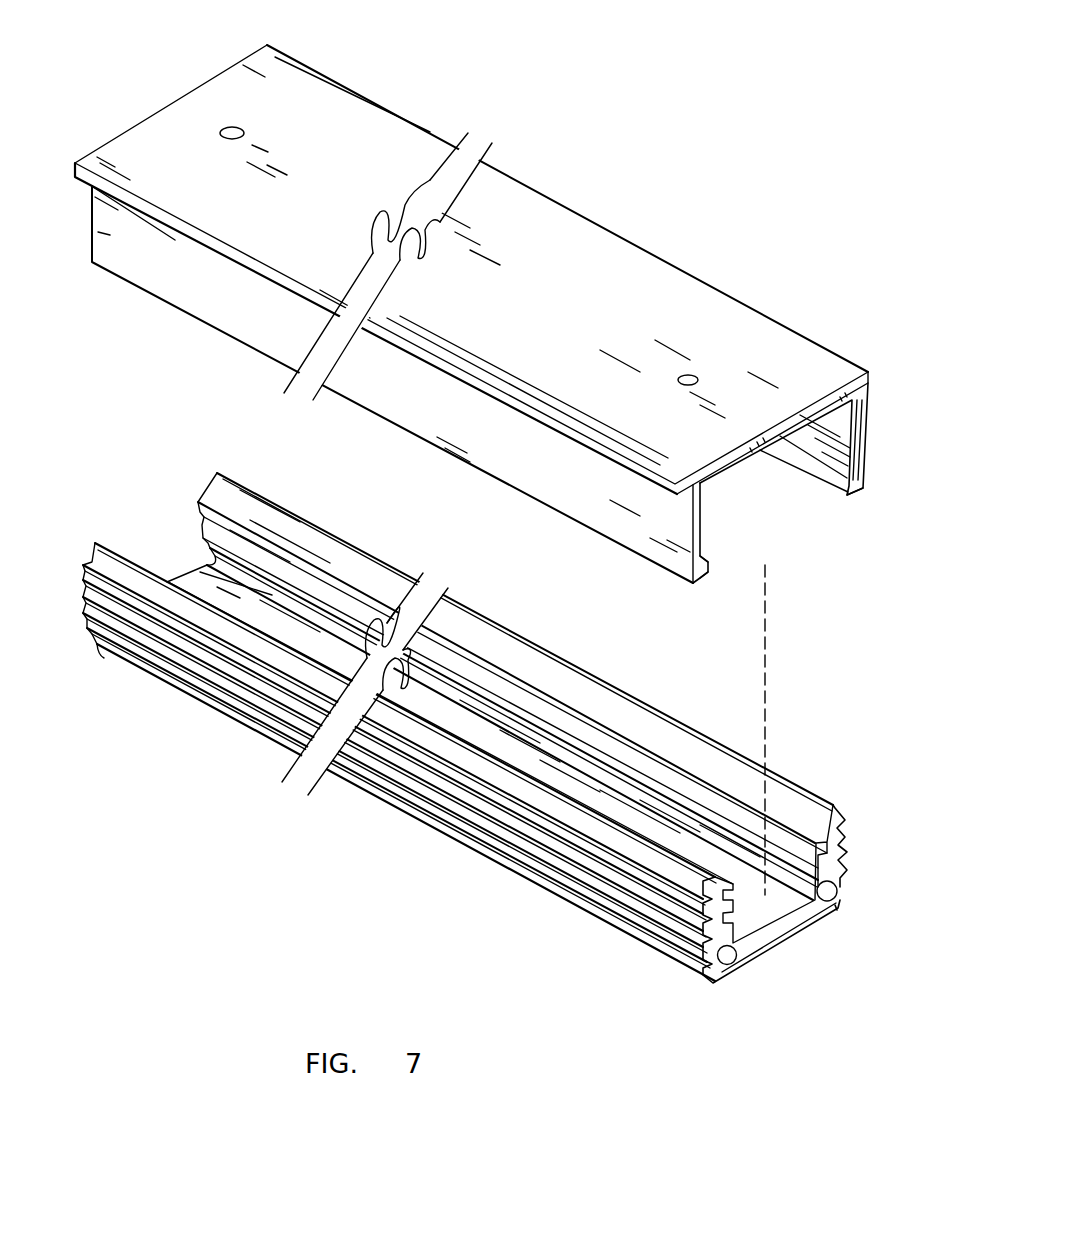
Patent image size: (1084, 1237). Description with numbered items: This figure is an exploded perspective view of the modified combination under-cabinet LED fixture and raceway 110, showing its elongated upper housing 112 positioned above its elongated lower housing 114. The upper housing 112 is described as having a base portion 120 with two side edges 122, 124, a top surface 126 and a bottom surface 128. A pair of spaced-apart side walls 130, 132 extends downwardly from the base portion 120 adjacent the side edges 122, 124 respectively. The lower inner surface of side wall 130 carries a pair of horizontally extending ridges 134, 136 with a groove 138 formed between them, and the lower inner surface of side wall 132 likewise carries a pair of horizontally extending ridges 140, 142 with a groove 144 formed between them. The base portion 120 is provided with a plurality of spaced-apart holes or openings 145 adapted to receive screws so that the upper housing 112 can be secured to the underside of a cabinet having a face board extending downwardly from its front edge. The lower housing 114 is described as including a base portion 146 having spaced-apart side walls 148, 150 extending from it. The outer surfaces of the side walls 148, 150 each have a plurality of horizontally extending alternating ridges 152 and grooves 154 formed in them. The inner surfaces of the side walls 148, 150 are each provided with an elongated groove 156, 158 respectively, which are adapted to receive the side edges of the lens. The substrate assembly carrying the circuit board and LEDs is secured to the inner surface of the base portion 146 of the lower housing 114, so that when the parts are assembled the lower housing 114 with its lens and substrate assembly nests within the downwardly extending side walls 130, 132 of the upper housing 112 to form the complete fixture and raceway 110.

The combination under-cabinet LED fixture and raceway 110 is at (614, 138).
The upper housing 112 is at (473, 350).
The lower housing 114 is at (480, 757).
The base portion 120 is at (370, 186).
The side edge 122 is at (483, 388).
The side edge 124 is at (868, 370).
The top surface 126 is at (555, 318).
The bottom surface 128 is at (720, 477).
The side wall 130 is at (525, 466).
The side wall 132 is at (850, 440).
The ridge 134 is at (705, 550).
The ridge 136 is at (705, 585).
The groove 138 is at (713, 567).
The ridge 140 is at (795, 440).
The ridge 142 is at (862, 494).
The groove 144 is at (847, 493).
The holes or openings 145 is at (228, 126).
The base portion 146 is at (480, 757).
The side wall 148 is at (520, 850).
The side wall 150 is at (834, 805).
The ridges 152 is at (472, 806).
The grooves 154 is at (847, 853).
The elongated groove 156 is at (728, 948).
The elongated groove 158 is at (815, 845).